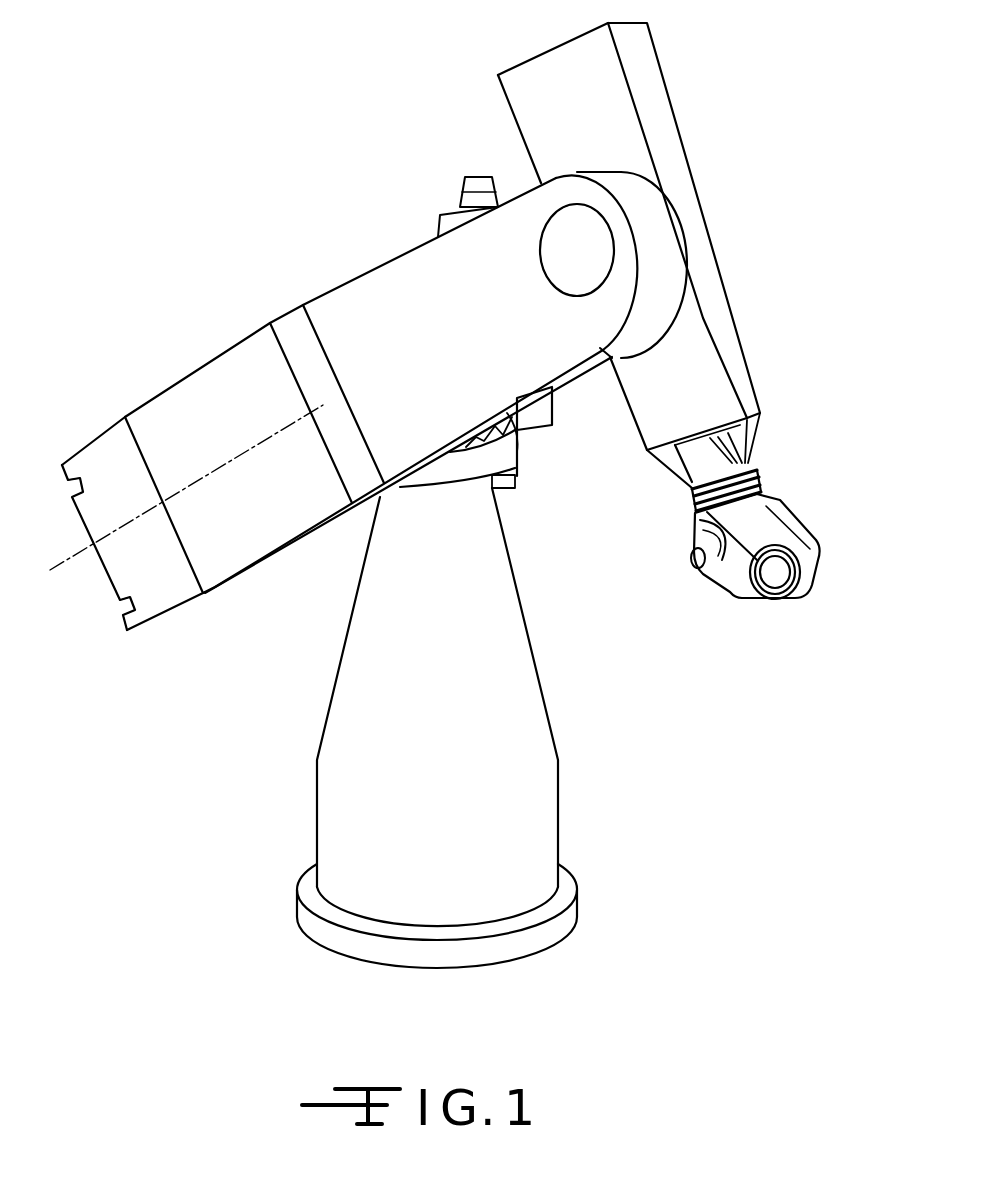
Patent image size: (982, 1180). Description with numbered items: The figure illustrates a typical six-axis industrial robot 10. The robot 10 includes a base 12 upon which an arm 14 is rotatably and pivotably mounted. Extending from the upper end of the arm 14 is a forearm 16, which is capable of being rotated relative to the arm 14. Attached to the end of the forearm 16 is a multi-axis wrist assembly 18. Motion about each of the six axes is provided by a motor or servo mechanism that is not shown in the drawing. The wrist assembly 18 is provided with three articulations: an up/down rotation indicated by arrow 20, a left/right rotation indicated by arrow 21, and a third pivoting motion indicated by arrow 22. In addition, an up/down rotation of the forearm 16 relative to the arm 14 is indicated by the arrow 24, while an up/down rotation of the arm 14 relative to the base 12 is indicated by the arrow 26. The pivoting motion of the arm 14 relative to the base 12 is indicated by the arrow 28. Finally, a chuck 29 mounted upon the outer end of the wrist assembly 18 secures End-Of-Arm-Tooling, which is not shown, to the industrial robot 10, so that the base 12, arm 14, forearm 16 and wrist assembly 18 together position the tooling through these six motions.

The industrial robot 10 is at (733, 183).
The base 12 is at (426, 748).
The arm 14 is at (416, 333).
The forearm 16 is at (561, 131).
The multi-axis wrist assembly 18 is at (792, 489).
The arrow 20 is at (677, 592).
The arrow 21 is at (782, 461).
The arrow 22 is at (802, 602).
The arrow 24 is at (590, 225).
The arrow 26 is at (55, 517).
The arrow 28 is at (557, 434).
The chuck 29 is at (779, 570).